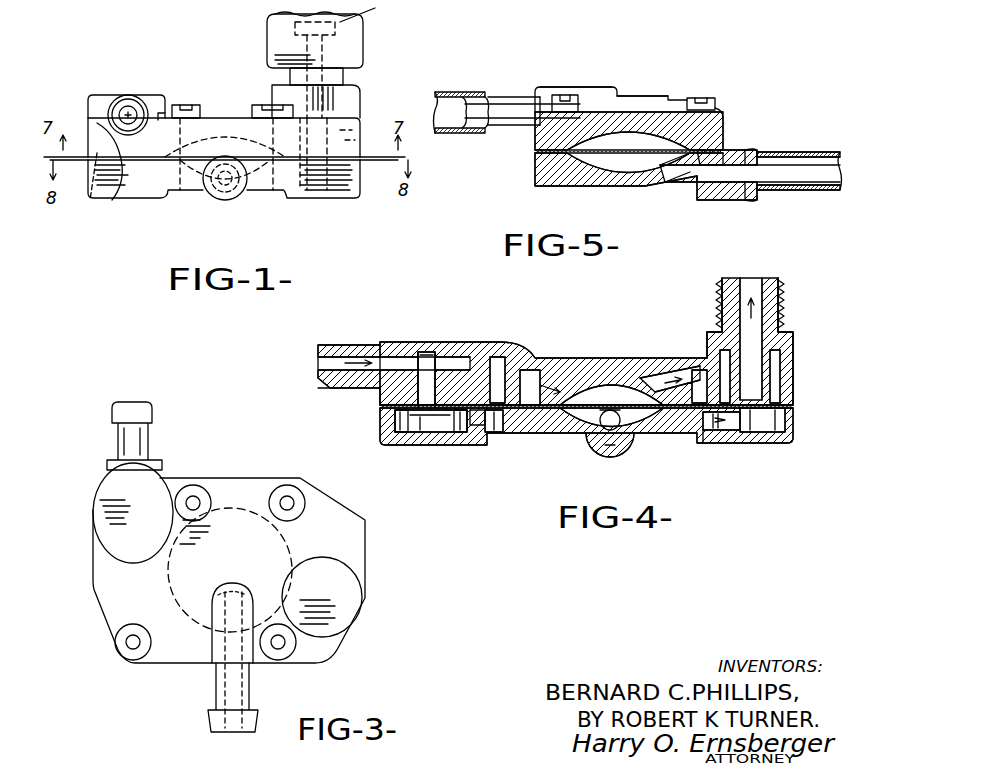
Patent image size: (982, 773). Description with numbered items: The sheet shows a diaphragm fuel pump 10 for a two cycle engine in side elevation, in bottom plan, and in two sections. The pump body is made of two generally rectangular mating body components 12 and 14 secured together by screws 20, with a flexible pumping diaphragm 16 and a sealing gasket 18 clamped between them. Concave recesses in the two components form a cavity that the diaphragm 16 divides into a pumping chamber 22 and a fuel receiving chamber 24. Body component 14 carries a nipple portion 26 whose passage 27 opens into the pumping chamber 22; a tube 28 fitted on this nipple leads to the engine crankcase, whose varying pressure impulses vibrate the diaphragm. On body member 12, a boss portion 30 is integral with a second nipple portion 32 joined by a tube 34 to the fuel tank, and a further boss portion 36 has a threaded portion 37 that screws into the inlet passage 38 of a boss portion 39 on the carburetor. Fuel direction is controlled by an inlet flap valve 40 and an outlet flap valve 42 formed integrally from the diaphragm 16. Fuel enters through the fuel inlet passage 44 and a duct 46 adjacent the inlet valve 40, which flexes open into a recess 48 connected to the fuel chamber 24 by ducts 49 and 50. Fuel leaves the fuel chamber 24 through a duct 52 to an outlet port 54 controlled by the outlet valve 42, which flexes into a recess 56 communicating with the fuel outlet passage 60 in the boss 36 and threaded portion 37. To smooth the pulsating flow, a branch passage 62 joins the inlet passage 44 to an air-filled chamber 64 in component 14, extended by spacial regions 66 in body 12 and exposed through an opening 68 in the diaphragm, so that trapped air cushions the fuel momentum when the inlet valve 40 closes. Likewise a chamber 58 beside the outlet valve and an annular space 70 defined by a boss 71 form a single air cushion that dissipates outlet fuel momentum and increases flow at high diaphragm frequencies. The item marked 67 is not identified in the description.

In FIG. 1, the pump 10 is at (372, 100).
In FIG. 1, the body component 12 is at (90, 104).
In FIG. 5, the body component 12 is at (725, 116).
In FIG. 4, the body component 12 is at (608, 362).
In FIG. 1, the body component 14 is at (128, 198).
In FIG. 5, the body component 14 is at (538, 184).
In FIG. 4, the body component 14 is at (548, 445).
In FIG. 3, the body component 14 is at (358, 546).
In FIG. 1, the pumping diaphragm 16 is at (96, 125).
In FIG. 5, the pumping diaphragm 16 is at (600, 153).
In FIG. 4, the pumping diaphragm 16 is at (612, 400).
In FIG. 1, the sealing gasket 18 is at (95, 193).
In FIG. 5, the sealing gasket 18 is at (586, 155).
In FIG. 4, the sealing gasket 18 is at (560, 410).
In FIG. 1, the screws 20 is at (195, 104).
In FIG. 5, the screws 20 is at (568, 97).
In FIG. 3, the screws 20 is at (285, 498).
In FIG. 1, the pumping chamber 22 is at (255, 185).
In FIG. 5, the pumping chamber 22 is at (632, 166).
In FIG. 4, the pumping chamber 22 is at (578, 420).
In FIG. 3, the pumping chamber 22 is at (175, 588).
In FIG. 1, the fuel receiving chamber 24 is at (218, 130).
In FIG. 5, the fuel receiving chamber 24 is at (622, 142).
In FIG. 4, the fuel receiving chamber 24 is at (625, 395).
In FIG. 1, the nipple portion 26 is at (215, 200).
In FIG. 5, the nipple portion 26 is at (770, 200).
In FIG. 4, the nipple portion 26 is at (615, 445).
In FIG. 3, the nipple portion 26 is at (222, 693).
In FIG. 5, the passage 27 is at (762, 168).
In FIG. 5, the tube 28 is at (806, 191).
In FIG. 1, the boss portion 30 is at (95, 96).
In FIG. 5, the boss portion 30 is at (562, 87).
In FIG. 4, the boss portion 30 is at (450, 342).
In FIG. 1, the second nipple portion 32 is at (140, 100).
In FIG. 5, the second nipple portion 32 is at (494, 94).
In FIG. 4, the second nipple portion 32 is at (372, 344).
In FIG. 3, the second nipple portion 32 is at (148, 436).
In FIG. 5, the tube 34 is at (448, 134).
In FIG. 1, the boss portion 36 is at (350, 90).
In FIG. 4, the boss portion 36 is at (712, 334).
In FIG. 1, the threaded portion 37 is at (343, 48).
In FIG. 4, the threaded portion 37 is at (782, 312).
In FIG. 1, the inlet passage 38 is at (290, 46).
In FIG. 1, the boss portion 39 is at (352, 25).
In FIG. 4, the inlet flap valve 40 is at (490, 425).
In FIG. 4, the outlet flap valve 42 is at (706, 428).
In FIG. 1, the fuel inlet passage 44 is at (128, 108).
In FIG. 4, the fuel inlet passage 44 is at (322, 362).
In FIG. 5, the duct 46 is at (668, 98).
In FIG. 4, the duct 46 is at (500, 358).
In FIG. 4, the recess 48 is at (515, 418).
In FIG. 4, the duct 49 is at (535, 372).
In FIG. 4, the duct 50 is at (548, 383).
In FIG. 4, the duct 52 is at (668, 370).
In FIG. 4, the outlet port 54 is at (700, 368).
In FIG. 4, the recess 56 is at (718, 445).
In FIG. 4, the chamber 58 is at (770, 432).
In FIG. 1, the fuel outlet passage 60 is at (325, 121).
In FIG. 4, the fuel outlet passage 60 is at (758, 342).
In FIG. 1, the branch passage 62 is at (112, 205).
In FIG. 4, the branch passage 62 is at (426, 350).
In FIG. 4, the chamber 64 is at (418, 443).
In FIG. 4, the spacial regions 66 is at (396, 413).
In FIG. 4, the valve seat 67 is at (395, 428).
In FIG. 4, the opening 68 is at (425, 440).
In FIG. 4, the annular space 70 is at (782, 385).
In FIG. 4, the boss 71 is at (733, 370).